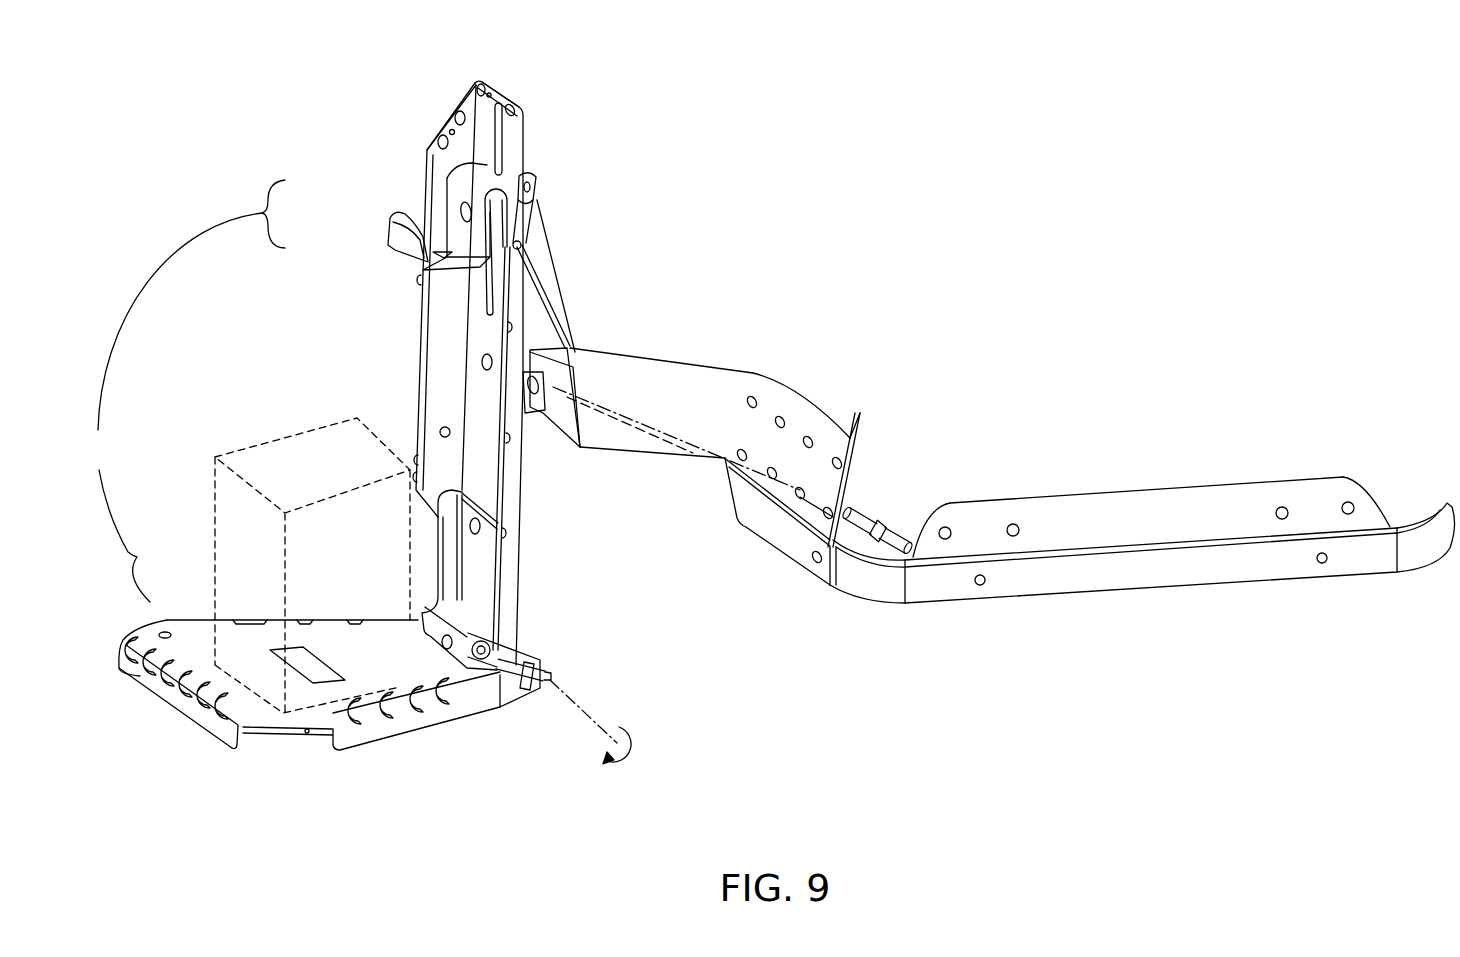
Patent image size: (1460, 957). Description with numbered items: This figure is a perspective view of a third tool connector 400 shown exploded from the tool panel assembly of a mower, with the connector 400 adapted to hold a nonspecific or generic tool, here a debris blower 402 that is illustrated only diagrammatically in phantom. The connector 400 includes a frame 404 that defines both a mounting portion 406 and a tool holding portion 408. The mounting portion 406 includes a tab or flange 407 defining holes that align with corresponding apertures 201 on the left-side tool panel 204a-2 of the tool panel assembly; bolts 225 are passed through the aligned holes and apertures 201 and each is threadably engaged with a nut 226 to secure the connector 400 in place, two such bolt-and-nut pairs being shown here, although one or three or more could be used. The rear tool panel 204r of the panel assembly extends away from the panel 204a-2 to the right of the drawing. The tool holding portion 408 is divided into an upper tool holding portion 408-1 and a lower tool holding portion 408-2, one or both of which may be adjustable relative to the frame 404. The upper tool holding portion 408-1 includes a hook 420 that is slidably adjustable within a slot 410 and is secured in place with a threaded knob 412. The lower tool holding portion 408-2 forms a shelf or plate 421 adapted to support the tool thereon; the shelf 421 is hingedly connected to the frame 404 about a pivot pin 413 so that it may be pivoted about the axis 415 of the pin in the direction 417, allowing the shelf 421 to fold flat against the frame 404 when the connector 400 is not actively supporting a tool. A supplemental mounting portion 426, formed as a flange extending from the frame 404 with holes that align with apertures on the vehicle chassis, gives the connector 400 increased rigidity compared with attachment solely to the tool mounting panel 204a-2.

The tool connector 400 is at (507, 84).
The frame 404 is at (523, 118).
The slot 410 is at (500, 139).
The threaded knob 412 is at (543, 218).
The hook 420 is at (400, 215).
The mounting portion 406 is at (537, 347).
The nut 226 is at (540, 413).
The tab or flange 407 is at (556, 432).
The left-side tool panel 204a-2 is at (773, 390).
The apertures 201 is at (800, 500).
The bolt 225 is at (913, 537).
The rear tool panel 204r is at (1130, 590).
The debris blower 402 is at (273, 440).
The tool holding portion 408 is at (171, 407).
The upper tool holding portion 408-1 is at (390, 233).
The lower tool holding portion 408-2 is at (188, 620).
The shelf or plate 421 is at (187, 660).
The pivot pin 413 is at (423, 610).
The supplemental mounting portion 426 is at (517, 667).
The axis 415 is at (572, 709).
The direction 417 is at (638, 745).